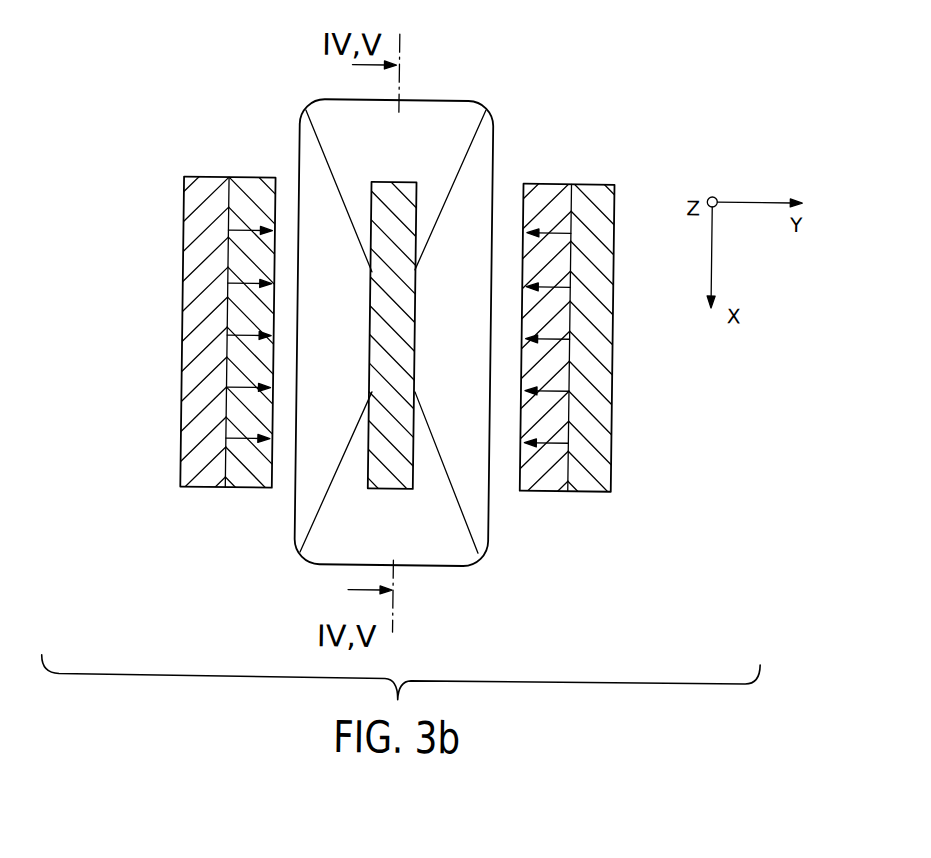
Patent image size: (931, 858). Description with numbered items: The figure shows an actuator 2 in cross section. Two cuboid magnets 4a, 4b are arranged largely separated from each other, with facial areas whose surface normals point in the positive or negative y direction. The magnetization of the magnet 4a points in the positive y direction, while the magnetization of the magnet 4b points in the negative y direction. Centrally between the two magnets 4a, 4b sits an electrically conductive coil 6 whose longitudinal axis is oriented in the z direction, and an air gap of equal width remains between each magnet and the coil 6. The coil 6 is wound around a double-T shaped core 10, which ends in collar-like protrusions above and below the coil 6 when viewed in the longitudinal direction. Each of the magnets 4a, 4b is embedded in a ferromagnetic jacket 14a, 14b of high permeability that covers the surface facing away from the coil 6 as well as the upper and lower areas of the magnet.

The actuator 2 is at (394, 312).
The coil 6 is at (436, 554).
The double-T shaped core 10 is at (386, 484).
The cuboid magnet 4a is at (198, 335).
The cuboid magnet 4b is at (606, 341).
The ferromagnetic jacket 14a is at (196, 456).
The ferromagnetic jacket 14b is at (604, 464).